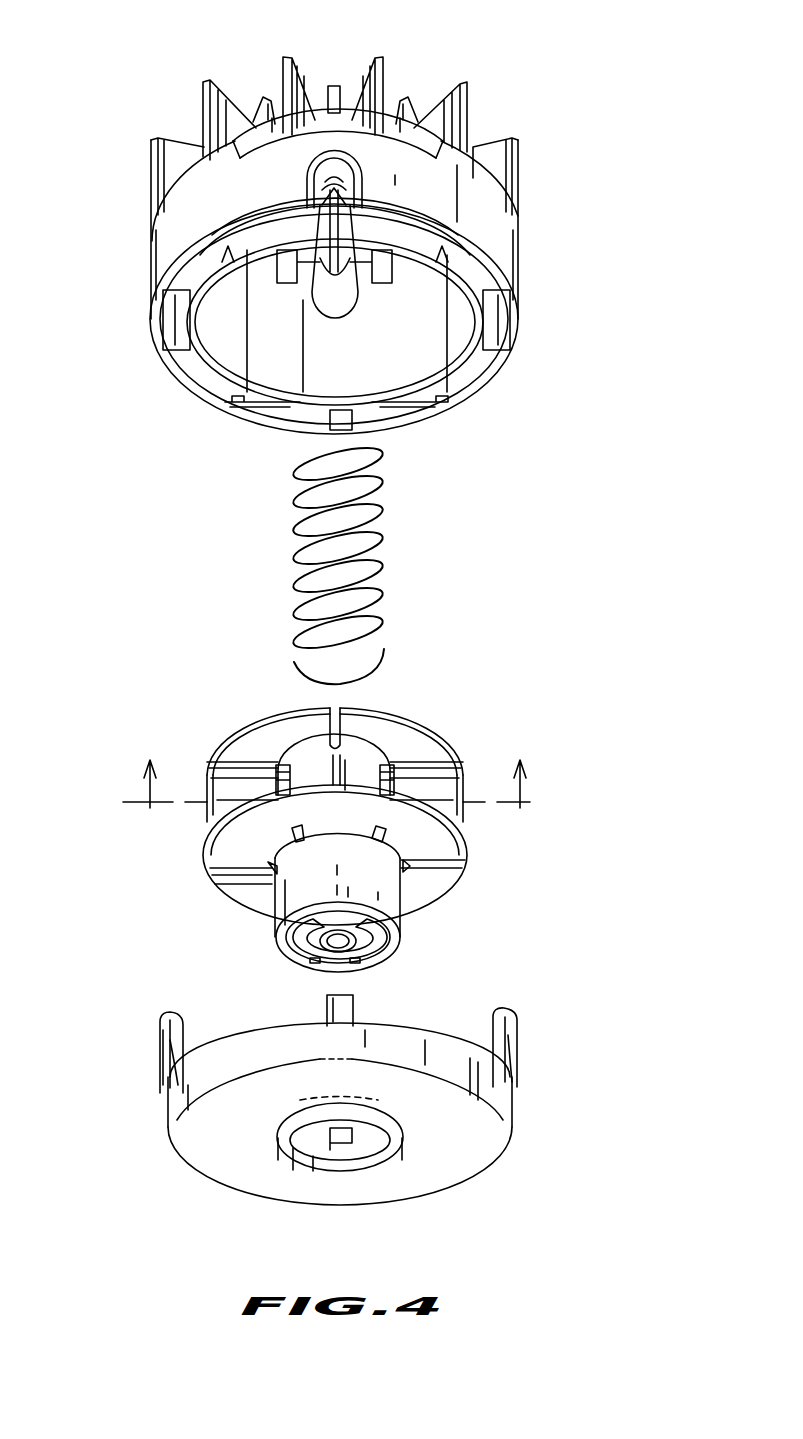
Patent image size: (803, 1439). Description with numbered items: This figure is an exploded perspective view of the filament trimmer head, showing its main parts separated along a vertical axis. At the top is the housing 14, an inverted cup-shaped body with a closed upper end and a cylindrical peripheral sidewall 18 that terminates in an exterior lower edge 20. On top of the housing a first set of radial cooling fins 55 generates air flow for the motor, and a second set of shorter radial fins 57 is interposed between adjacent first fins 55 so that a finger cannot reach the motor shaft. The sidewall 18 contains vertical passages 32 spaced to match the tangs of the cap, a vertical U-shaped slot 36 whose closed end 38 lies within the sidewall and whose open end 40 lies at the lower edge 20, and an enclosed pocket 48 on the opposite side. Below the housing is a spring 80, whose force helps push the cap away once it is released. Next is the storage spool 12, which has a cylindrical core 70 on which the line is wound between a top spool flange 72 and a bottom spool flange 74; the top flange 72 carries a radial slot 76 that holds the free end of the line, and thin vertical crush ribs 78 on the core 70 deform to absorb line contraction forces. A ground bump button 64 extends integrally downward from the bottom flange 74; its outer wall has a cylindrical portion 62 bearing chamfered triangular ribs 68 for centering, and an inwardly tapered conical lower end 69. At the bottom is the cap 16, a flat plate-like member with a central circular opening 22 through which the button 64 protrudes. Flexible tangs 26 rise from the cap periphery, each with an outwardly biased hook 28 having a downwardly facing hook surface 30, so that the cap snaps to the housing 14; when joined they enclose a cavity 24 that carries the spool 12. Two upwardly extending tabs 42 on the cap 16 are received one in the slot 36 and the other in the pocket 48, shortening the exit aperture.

The storage spool 12 is at (369, 817).
The housing 14 is at (358, 227).
The cap 16 is at (359, 1104).
The peripheral sidewall 18 is at (225, 188).
The lower edge 20 is at (480, 368).
The circular opening 22 is at (372, 1171).
The cavity 24 is at (270, 343).
The flexible tangs 26 is at (165, 1080).
The hook 28 is at (170, 1013).
The hook surface 30 is at (162, 1056).
The vertical passages 32 is at (165, 318).
The U-shaped slot 36 is at (366, 180).
The closed end 38 is at (333, 150).
The open end 40 is at (372, 268).
The tab 42 is at (335, 1003).
The enclosed pocket 48 is at (350, 428).
The first radial cooling fins 55 is at (380, 62).
The second radial fins 57 is at (334, 86).
The cylindrical portion 62 is at (277, 884).
The ground bump button 64 is at (407, 931).
The chamfered triangular ribs 68 is at (376, 828).
The conical lower end 69 is at (270, 914).
The cylindrical core 70 is at (368, 762).
The top spool flange 72 is at (283, 712).
The bottom spool flange 74 is at (443, 880).
The radial slot 76 is at (345, 728).
The crush ribs 78 is at (283, 766).
The spring 80 is at (296, 519).